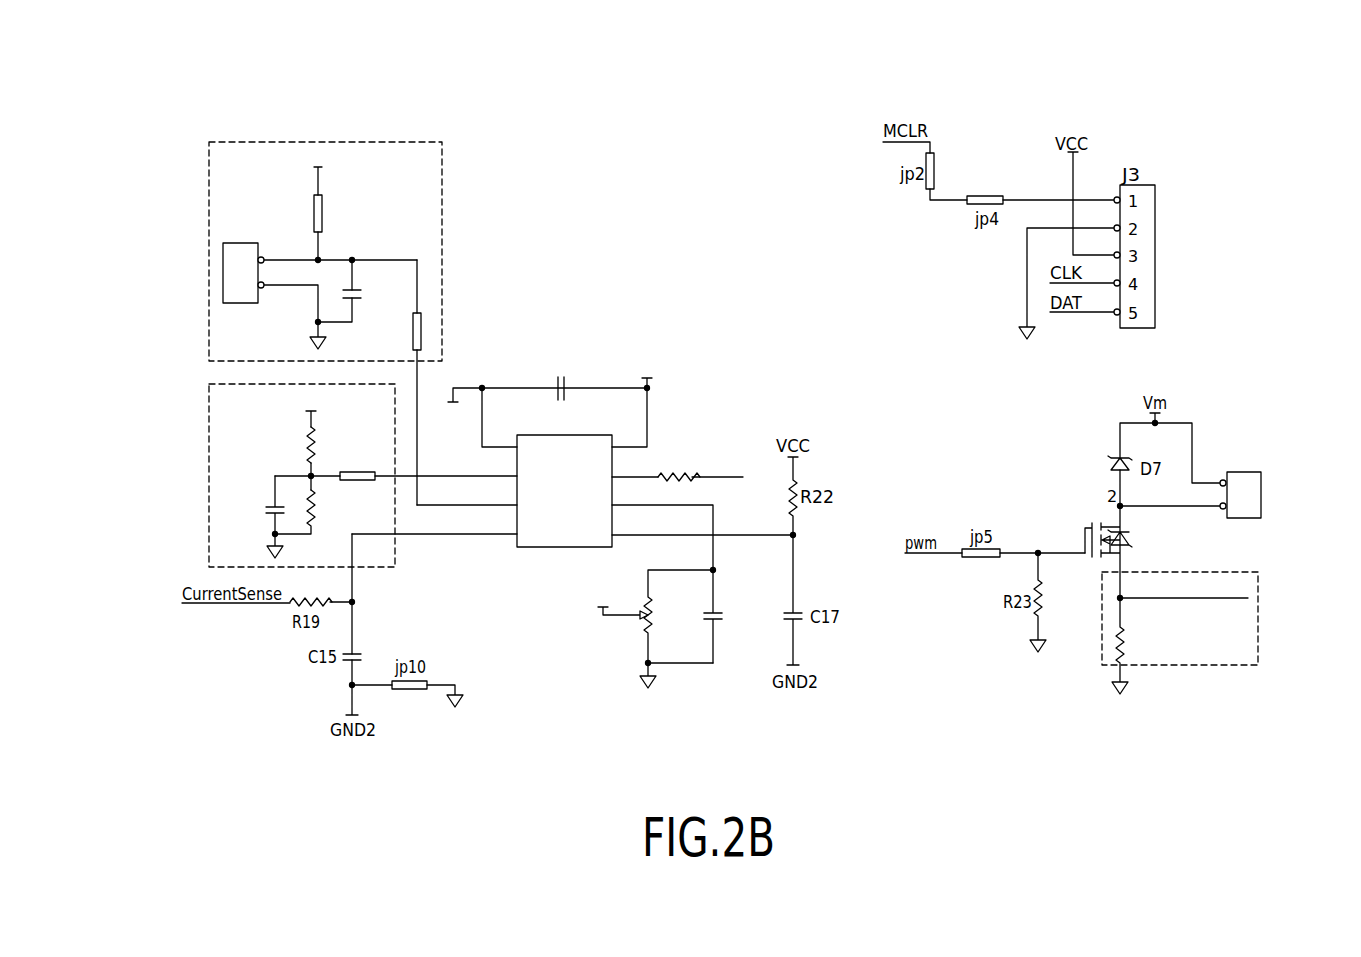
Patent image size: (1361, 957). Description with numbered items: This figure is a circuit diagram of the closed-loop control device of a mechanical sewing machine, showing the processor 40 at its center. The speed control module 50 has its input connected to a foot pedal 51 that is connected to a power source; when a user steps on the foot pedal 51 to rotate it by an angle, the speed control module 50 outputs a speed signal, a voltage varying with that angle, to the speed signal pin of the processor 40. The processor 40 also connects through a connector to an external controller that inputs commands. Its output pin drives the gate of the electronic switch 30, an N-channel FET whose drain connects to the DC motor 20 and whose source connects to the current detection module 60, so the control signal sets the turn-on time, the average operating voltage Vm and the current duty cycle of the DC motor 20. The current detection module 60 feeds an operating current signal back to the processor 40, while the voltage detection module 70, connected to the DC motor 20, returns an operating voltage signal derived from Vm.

The speed control module 50 is at (293, 285).
The foot pedal 51 is at (223, 268).
The voltage detection module 70 is at (205, 448).
The processor 40 is at (548, 547).
The DC motor 20 is at (1250, 472).
The electronic switch 30 is at (1085, 530).
The current detection module 60 is at (1262, 636).